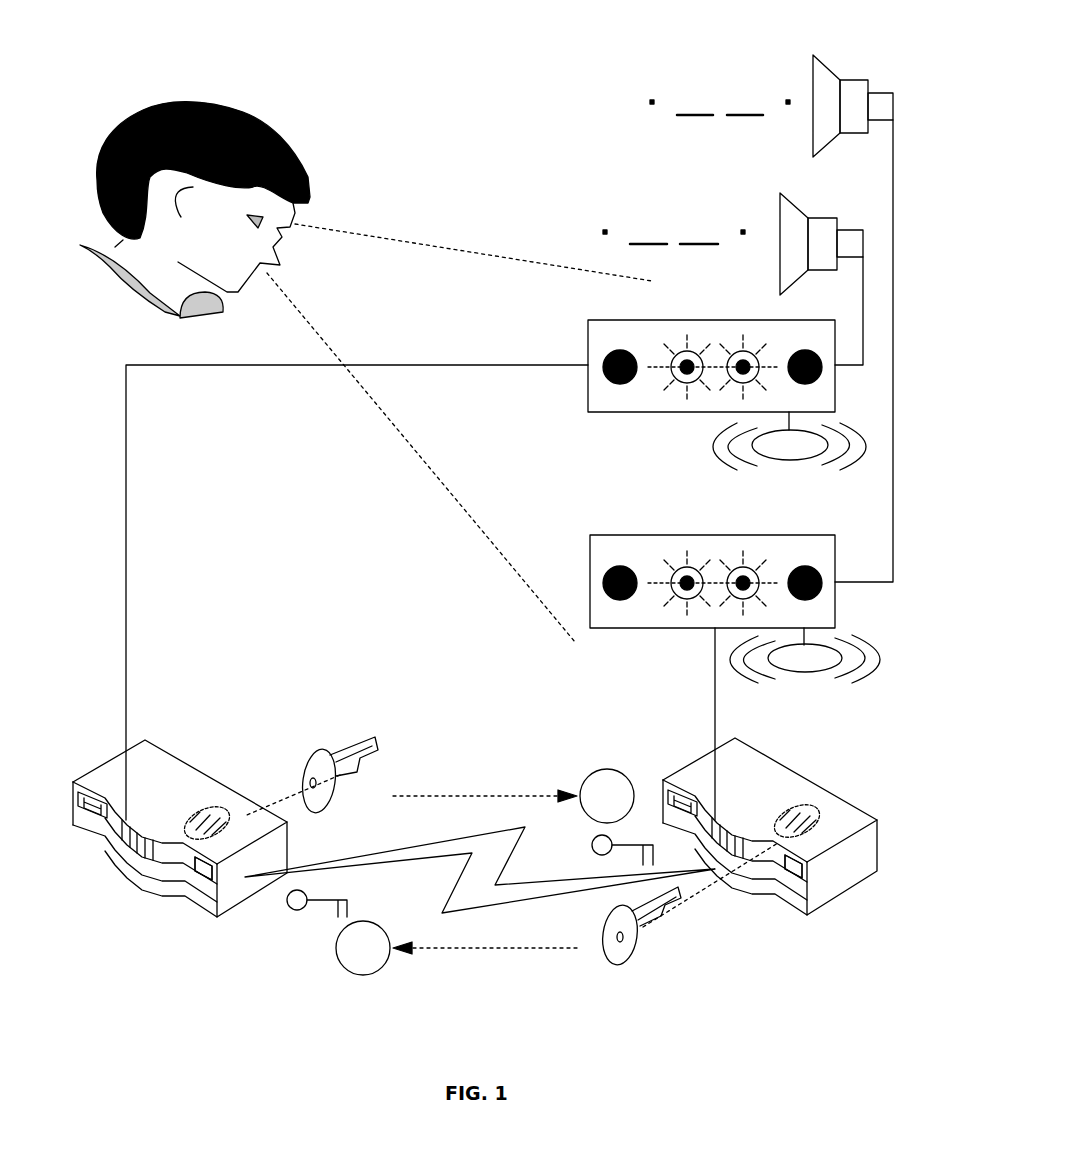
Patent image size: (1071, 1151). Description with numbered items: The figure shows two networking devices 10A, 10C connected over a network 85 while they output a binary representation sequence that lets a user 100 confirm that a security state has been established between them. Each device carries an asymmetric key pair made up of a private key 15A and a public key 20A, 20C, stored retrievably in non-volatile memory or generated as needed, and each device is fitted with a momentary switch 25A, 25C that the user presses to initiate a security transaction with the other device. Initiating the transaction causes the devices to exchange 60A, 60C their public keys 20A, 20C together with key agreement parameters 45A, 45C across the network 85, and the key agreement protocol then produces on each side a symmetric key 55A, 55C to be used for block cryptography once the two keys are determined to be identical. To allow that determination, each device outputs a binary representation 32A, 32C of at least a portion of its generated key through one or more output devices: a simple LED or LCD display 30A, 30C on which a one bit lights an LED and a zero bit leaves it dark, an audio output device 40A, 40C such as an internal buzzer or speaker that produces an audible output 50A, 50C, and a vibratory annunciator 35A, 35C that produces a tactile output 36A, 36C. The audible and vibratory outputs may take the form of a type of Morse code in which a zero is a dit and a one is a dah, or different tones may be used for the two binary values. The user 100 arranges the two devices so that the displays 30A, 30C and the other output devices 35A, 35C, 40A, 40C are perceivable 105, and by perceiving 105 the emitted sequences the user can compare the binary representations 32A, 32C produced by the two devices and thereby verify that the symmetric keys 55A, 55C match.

The user 100 is at (133, 290).
The perception by the user 105 is at (395, 425).
The networking device 10A is at (180, 849).
The networking device 10C is at (775, 900).
The private key 15A is at (242, 808).
The public key 20A is at (345, 740).
The public key 20C is at (627, 963).
The momentary switch 25A is at (207, 883).
The momentary switch 25C is at (797, 877).
The display 30A is at (480, 545).
The display 30C is at (712, 652).
The binary representation 32A is at (713, 342).
The binary representation 32C is at (713, 562).
The vibratory annunciator 35A is at (790, 436).
The vibratory annunciator 35C is at (805, 650).
The vibratory output 36A is at (860, 457).
The vibratory output 36C is at (875, 672).
The audio output device 40A is at (838, 221).
The audio output device 40C is at (870, 82).
The key agreement parameters 45A is at (607, 796).
The key agreement parameters 45C is at (363, 948).
The audio output 50A is at (672, 242).
The audio output 50C is at (718, 110).
The symmetric key 55A is at (352, 908).
The symmetric key 55C is at (587, 852).
The exchange 60A is at (477, 797).
The exchange 60C is at (477, 950).
The network 85 is at (489, 891).